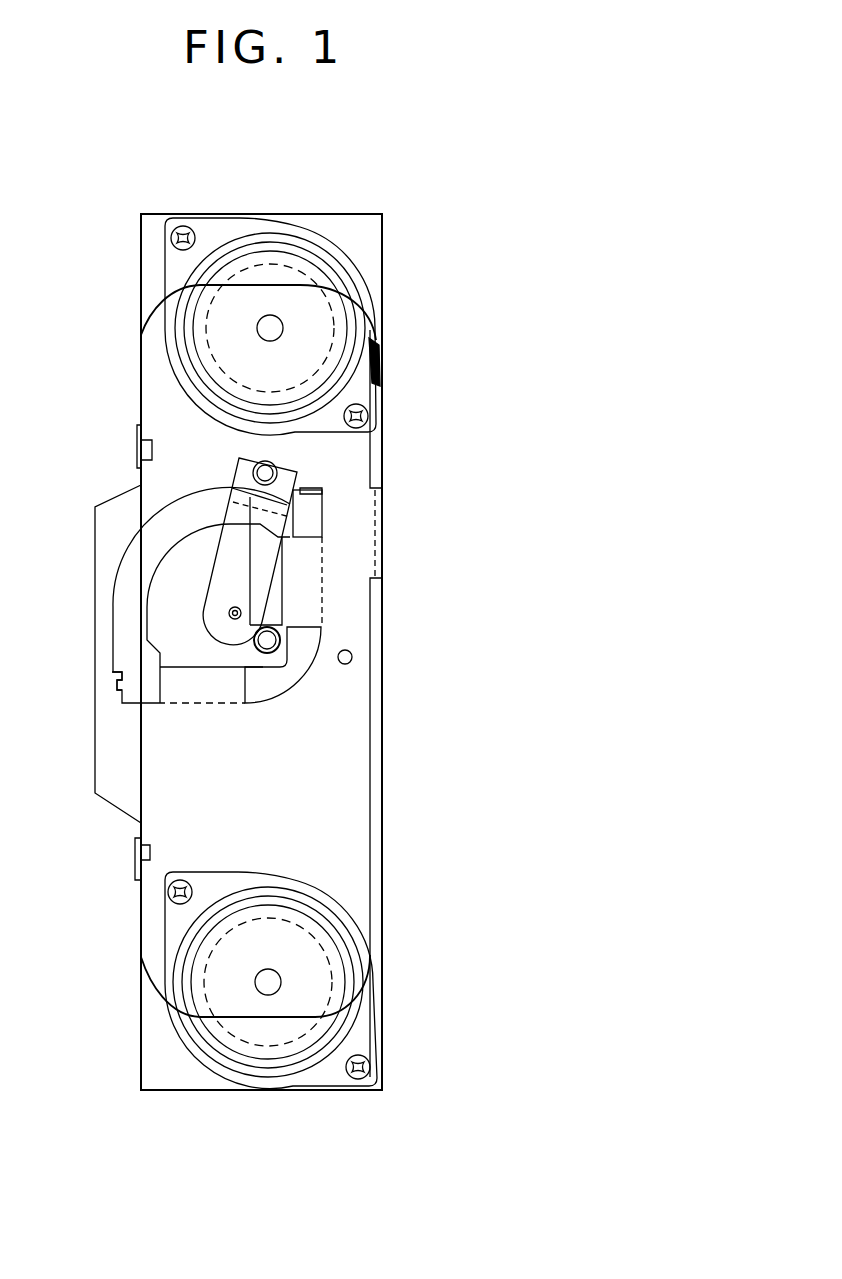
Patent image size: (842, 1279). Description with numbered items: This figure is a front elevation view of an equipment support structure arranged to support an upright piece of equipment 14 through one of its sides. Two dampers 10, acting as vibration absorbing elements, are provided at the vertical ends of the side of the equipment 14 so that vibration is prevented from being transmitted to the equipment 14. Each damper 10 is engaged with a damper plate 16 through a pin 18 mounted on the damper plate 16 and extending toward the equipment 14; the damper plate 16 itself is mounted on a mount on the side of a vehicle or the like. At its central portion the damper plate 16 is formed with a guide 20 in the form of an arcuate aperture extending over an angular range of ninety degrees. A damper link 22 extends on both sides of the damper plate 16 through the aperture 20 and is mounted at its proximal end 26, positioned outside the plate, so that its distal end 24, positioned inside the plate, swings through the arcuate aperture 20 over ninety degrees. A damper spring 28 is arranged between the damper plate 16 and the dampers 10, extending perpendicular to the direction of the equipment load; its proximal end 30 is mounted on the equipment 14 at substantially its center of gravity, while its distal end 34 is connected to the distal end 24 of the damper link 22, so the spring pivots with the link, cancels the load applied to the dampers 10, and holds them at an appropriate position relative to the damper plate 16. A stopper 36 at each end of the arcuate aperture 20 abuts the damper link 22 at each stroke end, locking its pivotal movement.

The damper 10 is at (290, 272).
The equipment 14 is at (168, 1083).
The damper plate 16 is at (153, 402).
The pin 18 is at (283, 328).
The guide 20 is at (315, 524).
The damper link 22 is at (216, 589).
The distal end 24 is at (294, 466).
The proximal end 26 is at (221, 631).
The damper spring 28 is at (282, 595).
The proximal end 30 is at (276, 651).
The distal end 34 is at (273, 462).
The stopper 36 is at (322, 497).